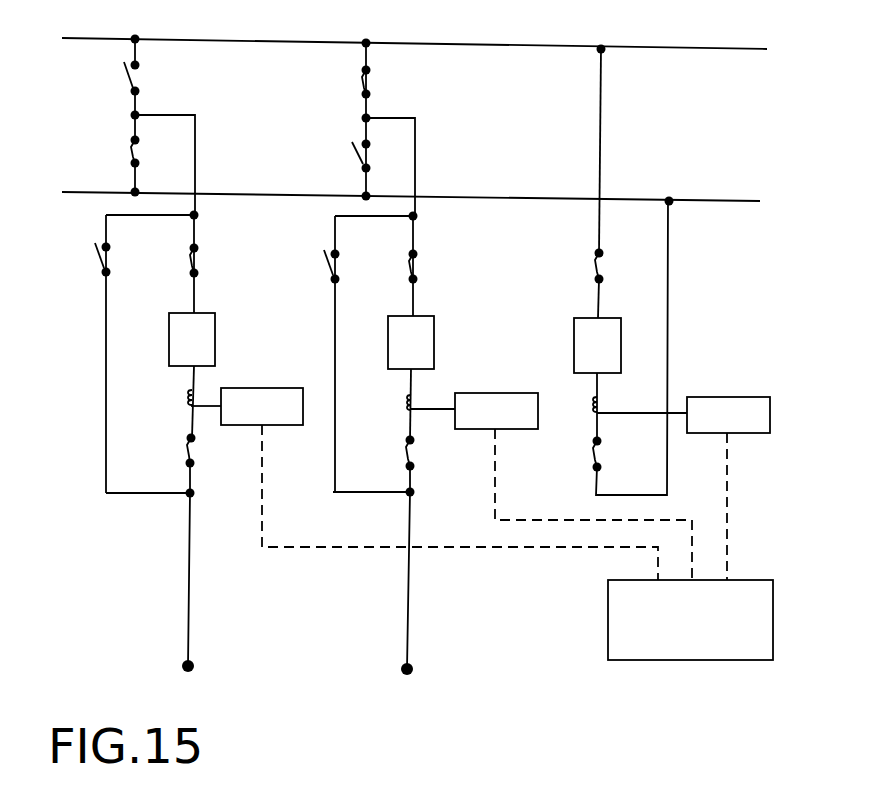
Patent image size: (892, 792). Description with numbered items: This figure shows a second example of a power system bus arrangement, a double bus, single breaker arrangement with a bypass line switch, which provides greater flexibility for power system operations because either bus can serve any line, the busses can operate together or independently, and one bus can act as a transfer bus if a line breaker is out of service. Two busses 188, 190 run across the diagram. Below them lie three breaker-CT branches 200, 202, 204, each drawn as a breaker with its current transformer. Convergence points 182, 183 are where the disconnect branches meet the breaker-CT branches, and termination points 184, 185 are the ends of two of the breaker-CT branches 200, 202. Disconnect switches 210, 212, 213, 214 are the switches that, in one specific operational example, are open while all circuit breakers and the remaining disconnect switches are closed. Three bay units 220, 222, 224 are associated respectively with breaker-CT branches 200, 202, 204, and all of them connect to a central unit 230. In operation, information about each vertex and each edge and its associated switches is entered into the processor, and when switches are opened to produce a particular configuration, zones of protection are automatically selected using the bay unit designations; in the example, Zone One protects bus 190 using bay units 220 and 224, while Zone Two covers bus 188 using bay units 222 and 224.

The bus 188 is at (640, 49).
The bus 190 is at (628, 200).
The convergence point 182 is at (197, 217).
The convergence point 183 is at (416, 218).
The termination point 184 is at (194, 662).
The termination point 185 is at (413, 668).
The breaker CT branch 200 is at (169, 338).
The breaker CT branch 202 is at (434, 345).
The breaker CT branch 204 is at (573, 345).
The disconnect switch 210 is at (133, 77).
The disconnect switch 212 is at (95, 257).
The disconnect switch 213 is at (350, 148).
The disconnect switch 214 is at (325, 265).
The bay unit 220 is at (283, 427).
The bay unit 222 is at (483, 432).
The bay unit 224 is at (723, 395).
The central unit 230 is at (775, 608).